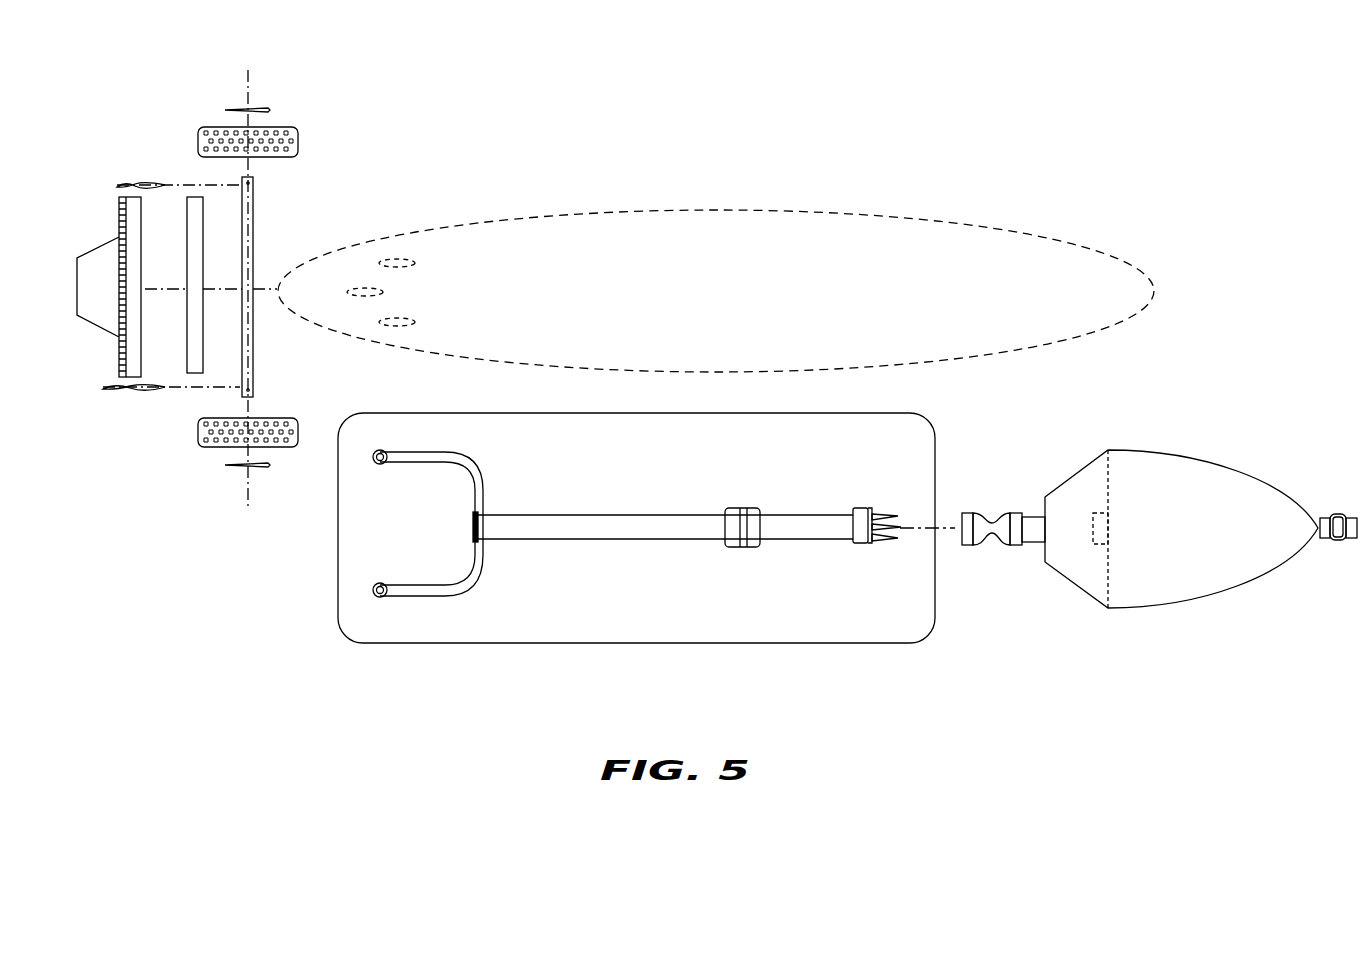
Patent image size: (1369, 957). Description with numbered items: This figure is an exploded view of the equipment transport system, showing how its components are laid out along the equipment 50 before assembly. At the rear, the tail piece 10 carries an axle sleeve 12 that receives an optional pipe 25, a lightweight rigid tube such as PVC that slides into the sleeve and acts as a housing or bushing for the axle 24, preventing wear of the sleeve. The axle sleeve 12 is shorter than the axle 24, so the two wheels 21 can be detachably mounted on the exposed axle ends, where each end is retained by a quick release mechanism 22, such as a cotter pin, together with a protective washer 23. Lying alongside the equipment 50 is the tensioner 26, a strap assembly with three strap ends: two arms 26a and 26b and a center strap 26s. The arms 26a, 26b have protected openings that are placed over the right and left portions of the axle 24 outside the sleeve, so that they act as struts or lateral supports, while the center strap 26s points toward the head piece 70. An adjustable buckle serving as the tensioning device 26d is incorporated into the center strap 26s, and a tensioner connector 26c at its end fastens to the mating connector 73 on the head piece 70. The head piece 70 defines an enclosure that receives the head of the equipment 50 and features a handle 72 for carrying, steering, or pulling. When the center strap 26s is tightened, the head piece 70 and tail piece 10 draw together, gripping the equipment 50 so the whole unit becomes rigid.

The tail piece 10 is at (75, 288).
The axle sleeve 12 is at (130, 346).
The wheels 21 is at (298, 142).
The quick release mechanism 22 is at (117, 185).
The protective washer 23 is at (270, 110).
The axle 24 is at (253, 340).
The pipe 25 is at (188, 212).
The tensioner 26 is at (903, 644).
The arm 26a is at (398, 584).
The arm 26b is at (420, 463).
The tensioner connector 26c is at (880, 543).
The tensioning device 26d is at (757, 508).
The center strap 26s is at (676, 543).
The equipment 50 is at (842, 212).
The head piece 70 is at (1205, 470).
The handle 72 is at (1355, 516).
The mating connector 73 is at (966, 548).